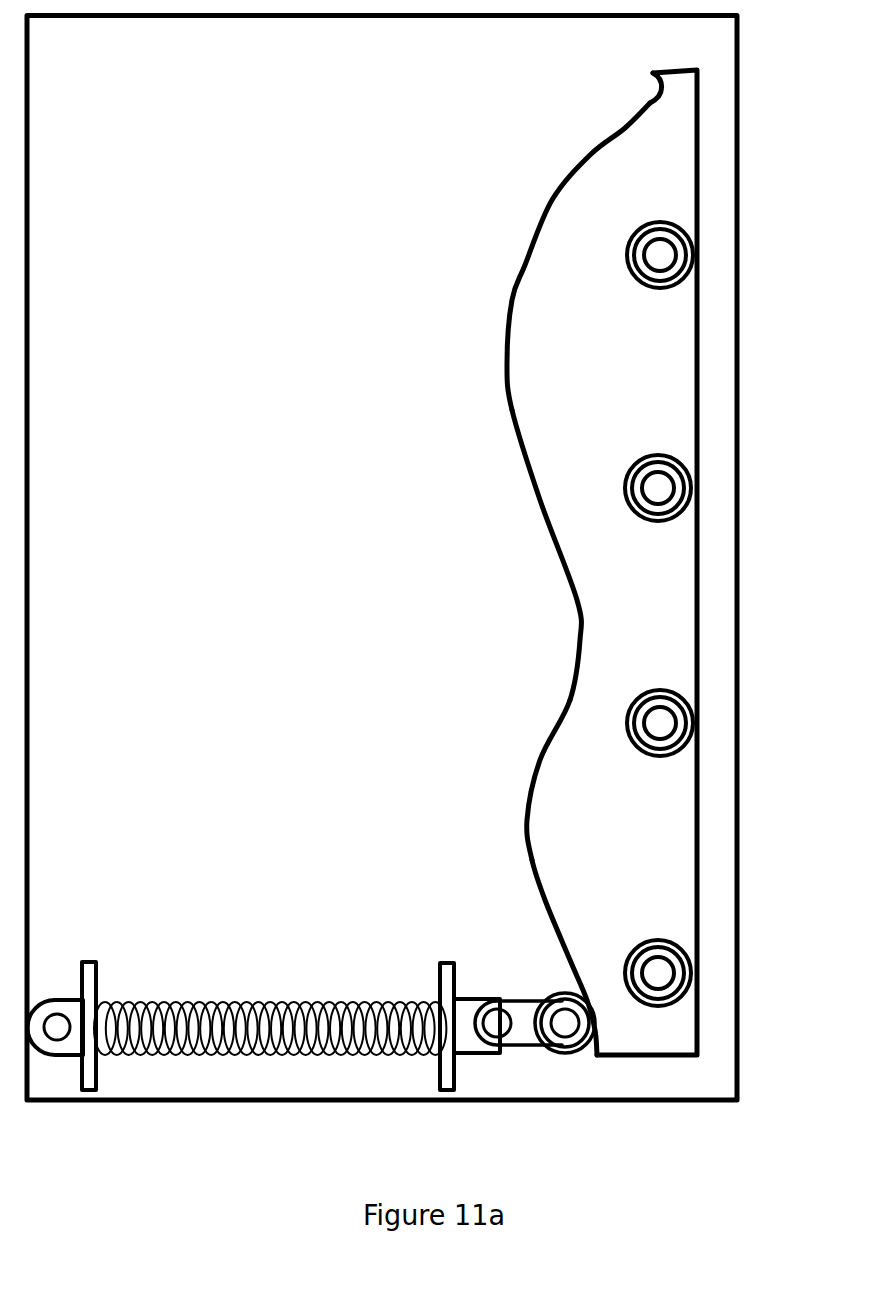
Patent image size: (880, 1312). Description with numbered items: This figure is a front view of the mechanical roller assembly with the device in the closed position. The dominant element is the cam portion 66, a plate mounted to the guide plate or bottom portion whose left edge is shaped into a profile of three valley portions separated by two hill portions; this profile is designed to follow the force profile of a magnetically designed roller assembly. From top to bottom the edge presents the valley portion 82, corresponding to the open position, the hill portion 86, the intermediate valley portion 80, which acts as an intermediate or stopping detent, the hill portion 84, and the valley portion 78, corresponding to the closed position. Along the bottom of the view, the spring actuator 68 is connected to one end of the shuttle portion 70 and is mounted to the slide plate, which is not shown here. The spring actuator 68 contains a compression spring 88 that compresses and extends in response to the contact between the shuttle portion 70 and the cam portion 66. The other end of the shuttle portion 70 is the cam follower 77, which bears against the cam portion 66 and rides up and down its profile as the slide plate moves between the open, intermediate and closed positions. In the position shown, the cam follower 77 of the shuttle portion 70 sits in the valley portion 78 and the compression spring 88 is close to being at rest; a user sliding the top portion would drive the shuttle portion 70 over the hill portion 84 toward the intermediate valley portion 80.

The cam portion 66 is at (686, 890).
The valley portion 82 is at (650, 103).
The hill portion 86 is at (507, 363).
The intermediate valley portion 80 is at (577, 625).
The hill portion 84 is at (527, 822).
The valley portion 78 is at (600, 1022).
The spring actuator 68 is at (119, 992).
The compression spring 88 is at (250, 1052).
The shuttle portion 70 is at (527, 1035).
The cam follower 77 is at (563, 1028).